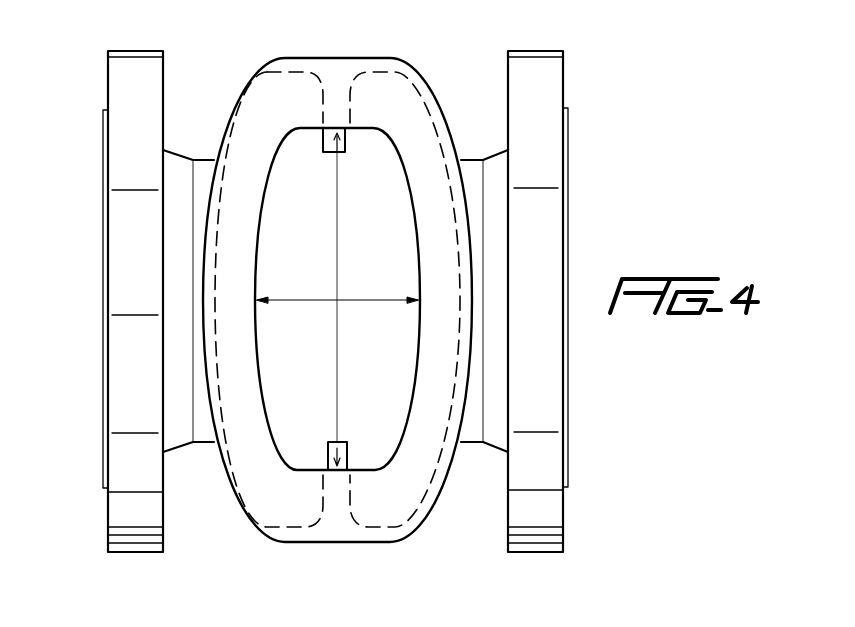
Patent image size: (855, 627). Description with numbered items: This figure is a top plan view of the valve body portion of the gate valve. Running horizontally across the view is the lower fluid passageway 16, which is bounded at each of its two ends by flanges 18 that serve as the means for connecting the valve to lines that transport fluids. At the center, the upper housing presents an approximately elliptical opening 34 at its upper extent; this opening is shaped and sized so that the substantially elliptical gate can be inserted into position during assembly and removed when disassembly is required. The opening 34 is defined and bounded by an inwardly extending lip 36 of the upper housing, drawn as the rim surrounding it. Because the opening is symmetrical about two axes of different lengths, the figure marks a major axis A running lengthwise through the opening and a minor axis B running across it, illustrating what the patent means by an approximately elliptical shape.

The lower fluid passageway 16 is at (175, 260).
The flanges 18 is at (126, 50).
The approximately elliptical opening 34 is at (305, 221).
The inwardly extending lip 36 is at (407, 457).
The major axis A is at (338, 408).
The minor axis B is at (311, 301).